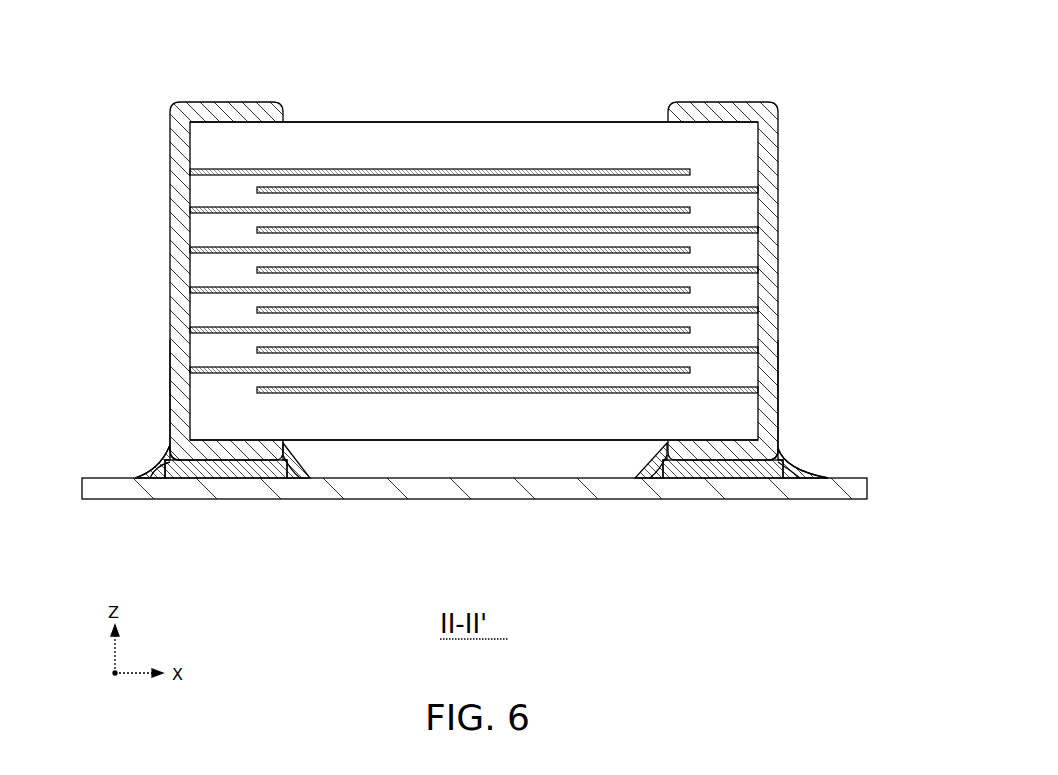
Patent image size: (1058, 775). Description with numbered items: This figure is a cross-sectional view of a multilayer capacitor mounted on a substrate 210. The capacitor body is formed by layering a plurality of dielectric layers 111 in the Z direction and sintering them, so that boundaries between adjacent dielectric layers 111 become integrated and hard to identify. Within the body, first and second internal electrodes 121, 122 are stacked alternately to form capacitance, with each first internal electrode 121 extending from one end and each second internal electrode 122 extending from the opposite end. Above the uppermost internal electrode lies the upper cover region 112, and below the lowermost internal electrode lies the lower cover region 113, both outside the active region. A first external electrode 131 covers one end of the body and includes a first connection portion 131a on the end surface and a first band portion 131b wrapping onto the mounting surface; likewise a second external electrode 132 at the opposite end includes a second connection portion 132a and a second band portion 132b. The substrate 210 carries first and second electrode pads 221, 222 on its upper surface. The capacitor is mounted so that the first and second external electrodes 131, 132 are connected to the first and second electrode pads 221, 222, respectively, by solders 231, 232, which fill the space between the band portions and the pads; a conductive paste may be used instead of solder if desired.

The dielectric layer 111 is at (690, 222).
The upper cover region 112 is at (497, 143).
The lower cover region 113 is at (488, 427).
The first internal electrode 121 is at (703, 177).
The second internal electrode 122 is at (742, 235).
The first external electrode 131 is at (110, 408).
The first connection portion 131a is at (171, 355).
The first band portion 131b is at (130, 444).
The second external electrode 132 is at (838, 409).
The second connection portion 132a is at (779, 352).
The second band portion 132b is at (785, 445).
The substrate 210 is at (597, 485).
The first electrode pad 221 is at (245, 470).
The second electrode pad 222 is at (703, 463).
The solder 231 is at (143, 470).
The solder 232 is at (790, 468).